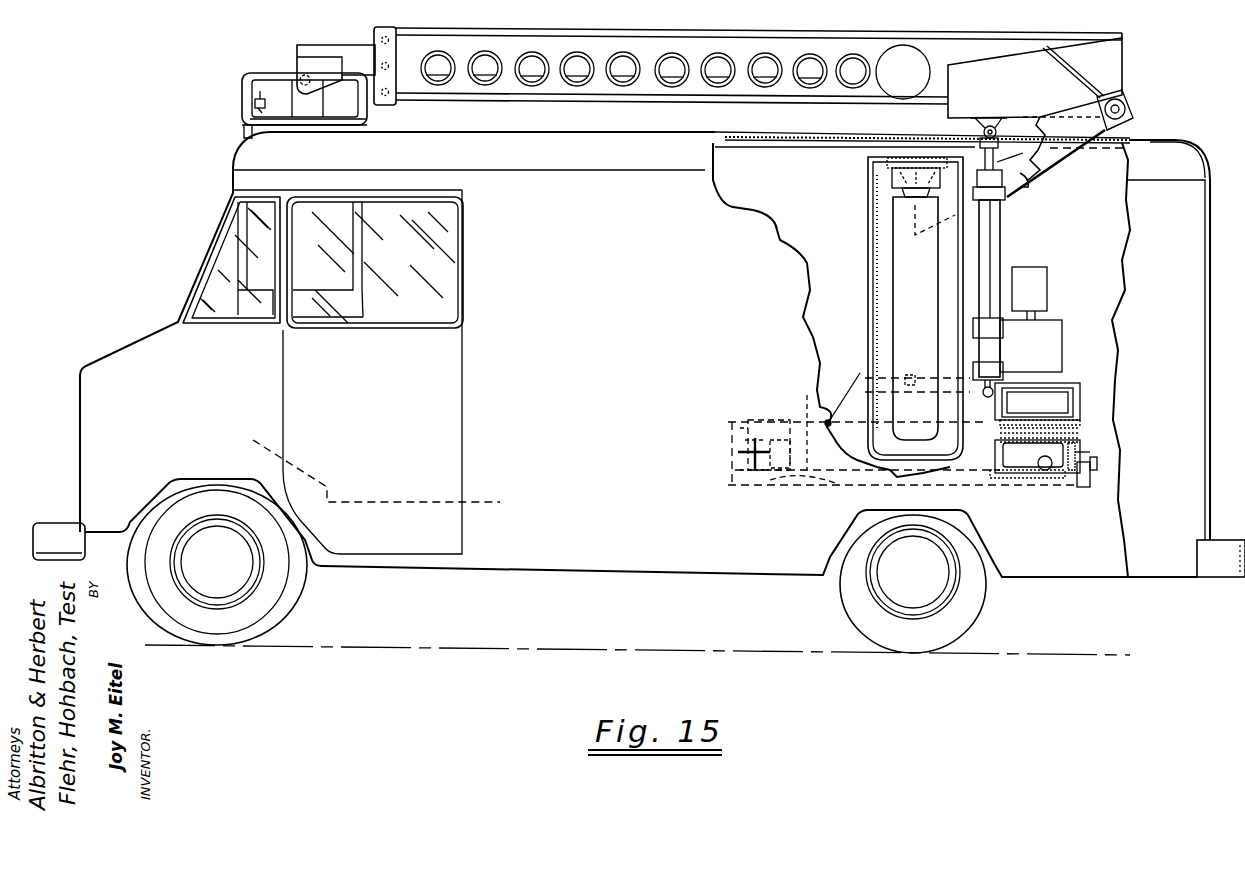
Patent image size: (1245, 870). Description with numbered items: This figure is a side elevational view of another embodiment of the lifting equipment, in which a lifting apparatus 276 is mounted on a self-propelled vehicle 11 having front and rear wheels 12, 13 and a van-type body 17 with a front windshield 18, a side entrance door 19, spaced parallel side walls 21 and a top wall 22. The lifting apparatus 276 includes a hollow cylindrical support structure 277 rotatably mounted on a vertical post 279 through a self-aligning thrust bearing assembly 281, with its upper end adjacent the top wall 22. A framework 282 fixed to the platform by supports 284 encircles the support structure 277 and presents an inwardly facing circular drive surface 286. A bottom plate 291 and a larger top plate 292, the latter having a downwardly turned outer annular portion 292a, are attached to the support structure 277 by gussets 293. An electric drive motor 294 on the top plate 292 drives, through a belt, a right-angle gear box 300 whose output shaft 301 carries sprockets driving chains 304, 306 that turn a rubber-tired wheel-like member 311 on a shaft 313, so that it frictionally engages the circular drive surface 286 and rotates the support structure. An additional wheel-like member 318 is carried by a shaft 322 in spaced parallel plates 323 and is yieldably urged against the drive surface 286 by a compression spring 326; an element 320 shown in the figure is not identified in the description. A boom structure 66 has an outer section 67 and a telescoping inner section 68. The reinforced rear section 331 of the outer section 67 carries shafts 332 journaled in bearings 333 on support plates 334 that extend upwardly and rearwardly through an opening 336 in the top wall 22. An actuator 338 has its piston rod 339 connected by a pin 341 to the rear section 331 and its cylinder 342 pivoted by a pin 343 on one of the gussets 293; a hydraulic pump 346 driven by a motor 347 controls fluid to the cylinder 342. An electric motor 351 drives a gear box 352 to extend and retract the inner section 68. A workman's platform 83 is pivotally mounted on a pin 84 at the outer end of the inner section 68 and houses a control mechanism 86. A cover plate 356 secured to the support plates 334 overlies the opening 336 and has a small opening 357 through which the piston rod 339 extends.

The self-propelled vehicle 11 is at (150, 288).
The front wheel 12 is at (290, 594).
The rear wheel 13 is at (985, 600).
The van-type body 17 is at (375, 262).
The front windshield 18 is at (207, 248).
The side entrance door 19 is at (445, 434).
The side wall 21 is at (1185, 292).
The top wall 22 is at (1192, 170).
The boom structure 66 is at (592, 101).
The outer boom section 67 is at (658, 92).
The inner boom section 68 is at (372, 50).
The workman's platform 83 is at (245, 74).
The pin 84 is at (298, 76).
The control mechanism 86 is at (254, 100).
The lifting apparatus 276 is at (1195, 92).
The support structure 277 is at (872, 247).
The vertical post 279 is at (930, 280).
The self-aligning thrust bearing assembly 281 is at (890, 176).
The framework 282 is at (1100, 476).
The supports 284 is at (1078, 452).
The circular drive surface 286 is at (1053, 480).
The bottom plate 291 is at (810, 478).
The top plate 292 is at (790, 418).
The downwardly turned outer annular portion 292a is at (740, 427).
The gussets 293 is at (863, 378).
The electric drive motor 294 is at (912, 378).
The right-angle gear box 300 is at (1046, 410).
The output shaft 301 is at (1040, 420).
The chain 304 is at (1082, 427).
The chain 306 is at (1082, 439).
The rubber-tired wheel-like member 311 is at (1044, 463).
The shaft 313 is at (1030, 480).
The wheel-like member 318 is at (745, 450).
The link 320 is at (842, 399).
The shaft 322 is at (770, 438).
The spaced parallel plates 323 is at (766, 438).
The compression spring 326 is at (812, 427).
The reinforced rear section 331 is at (1126, 58).
The shafts 332 is at (1128, 100).
The bearings 333 is at (1135, 115).
The support plates 334 is at (1028, 187).
The opening 336 is at (750, 152).
The actuator 338 is at (1005, 213).
The piston rod 339 is at (1018, 147).
The pin 341 is at (990, 128).
The cylinder 342 is at (1002, 238).
The pin 343 is at (992, 368).
The hydraulic pump 346 is at (1050, 349).
The motor 347 is at (1042, 268).
The electric motor 351 is at (862, 76).
The gear box 352 is at (915, 72).
The cover plate 356 is at (796, 142).
The small opening 357 is at (975, 132).